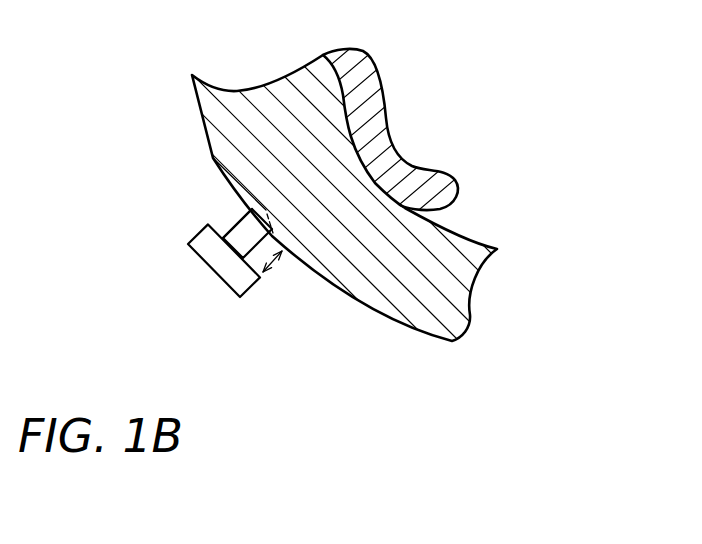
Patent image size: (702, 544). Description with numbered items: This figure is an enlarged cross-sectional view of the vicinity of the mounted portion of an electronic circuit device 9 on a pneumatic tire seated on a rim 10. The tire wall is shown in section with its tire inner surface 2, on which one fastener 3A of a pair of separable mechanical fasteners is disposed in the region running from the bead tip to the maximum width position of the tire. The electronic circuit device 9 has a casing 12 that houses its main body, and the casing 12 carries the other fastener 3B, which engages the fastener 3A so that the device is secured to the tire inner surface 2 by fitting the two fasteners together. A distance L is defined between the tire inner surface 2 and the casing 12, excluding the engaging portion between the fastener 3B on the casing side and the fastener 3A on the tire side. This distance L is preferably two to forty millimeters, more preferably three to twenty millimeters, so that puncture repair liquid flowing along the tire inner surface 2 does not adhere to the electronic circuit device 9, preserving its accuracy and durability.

The tire inner surface 2 is at (427, 329).
The rim 10 is at (375, 102).
The mechanical fastener 3A is at (213, 158).
The mechanical fastener 3B is at (230, 270).
The electronic circuit device 9 is at (238, 204).
The casing of electronic circuit device 12 is at (187, 249).
The distance between tire inner surface and casing L is at (272, 262).